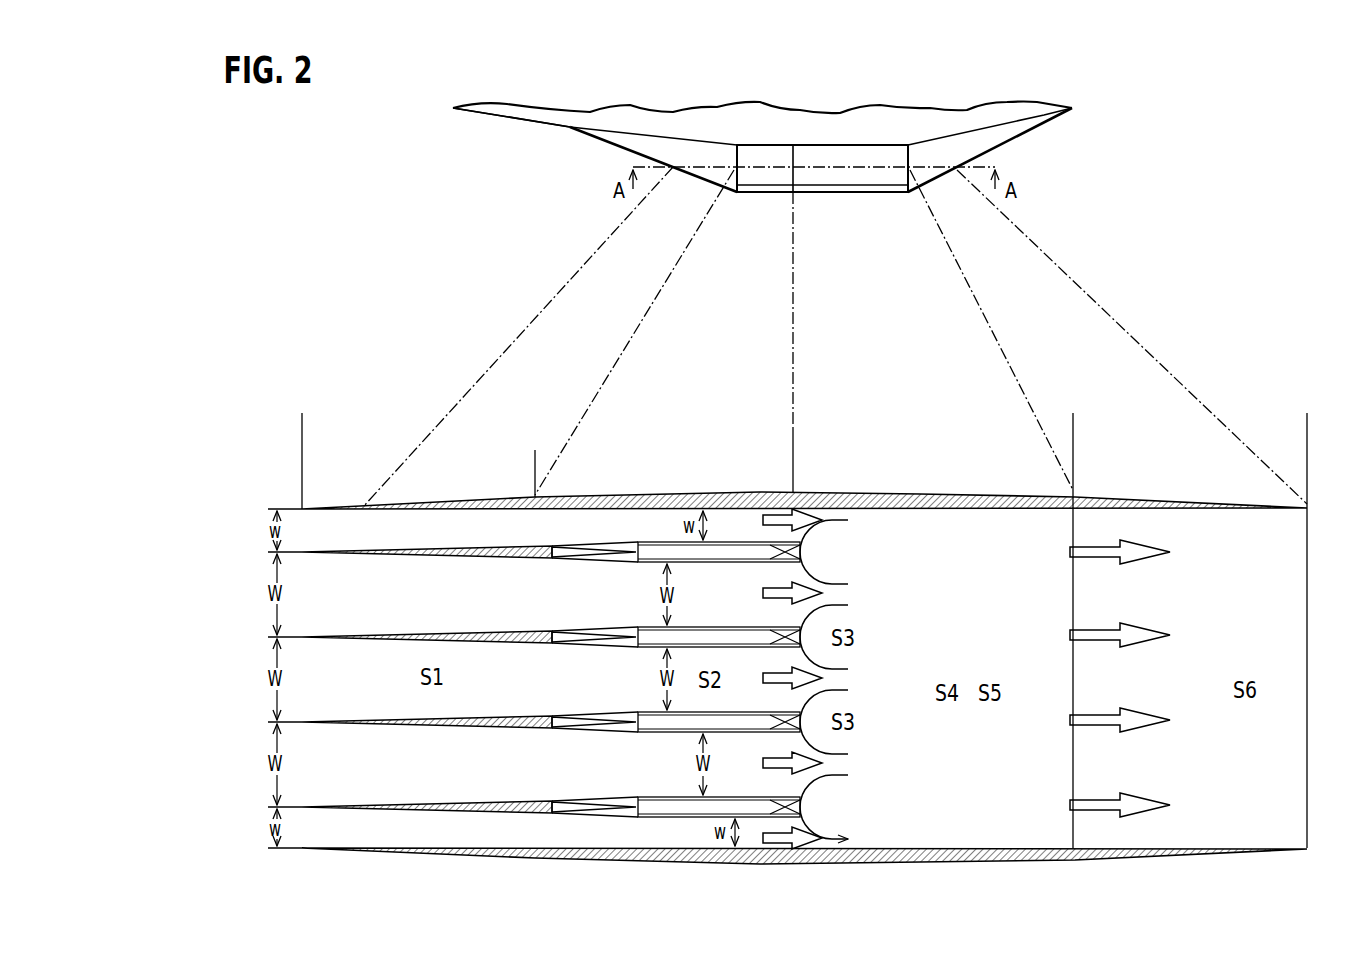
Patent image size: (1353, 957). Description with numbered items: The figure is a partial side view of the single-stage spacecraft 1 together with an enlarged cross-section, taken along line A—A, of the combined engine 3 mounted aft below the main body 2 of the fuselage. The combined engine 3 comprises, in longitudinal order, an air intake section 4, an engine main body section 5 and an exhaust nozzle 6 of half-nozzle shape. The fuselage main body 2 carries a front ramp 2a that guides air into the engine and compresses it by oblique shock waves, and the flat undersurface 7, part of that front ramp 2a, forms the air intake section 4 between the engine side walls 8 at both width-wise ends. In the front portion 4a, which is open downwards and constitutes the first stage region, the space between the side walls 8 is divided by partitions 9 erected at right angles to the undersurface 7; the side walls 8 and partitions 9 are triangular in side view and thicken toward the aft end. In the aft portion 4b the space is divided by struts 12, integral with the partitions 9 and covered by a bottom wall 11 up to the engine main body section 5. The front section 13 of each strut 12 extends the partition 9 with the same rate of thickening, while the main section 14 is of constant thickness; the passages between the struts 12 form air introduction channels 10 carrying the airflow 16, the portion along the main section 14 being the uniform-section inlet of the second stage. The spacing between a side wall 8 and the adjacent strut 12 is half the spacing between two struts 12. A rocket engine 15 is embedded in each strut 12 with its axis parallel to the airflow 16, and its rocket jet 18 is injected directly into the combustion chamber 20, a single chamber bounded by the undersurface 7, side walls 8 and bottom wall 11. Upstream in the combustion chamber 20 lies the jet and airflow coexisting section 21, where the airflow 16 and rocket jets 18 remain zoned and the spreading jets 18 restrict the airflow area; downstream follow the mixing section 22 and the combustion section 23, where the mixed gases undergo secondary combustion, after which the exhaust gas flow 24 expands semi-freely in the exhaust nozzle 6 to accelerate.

The single-stage spacecraft 1 is at (1096, 86).
The main body of the fuselage 2 is at (888, 130).
The front ramp 2a is at (533, 123).
The combined engine 3 is at (825, 196).
The air intake section 4 is at (793, 428).
The front portion of the air intake section 4a is at (302, 460).
The aft portion of the air intake section 4b is at (793, 460).
The engine main body section 5 is at (793, 428).
The exhaust nozzle 6 is at (1073, 428).
The flat undersurface of the main body 7 is at (678, 146).
The engine side wall 8 is at (770, 890).
The partition 9 is at (472, 558).
The air introduction channel 10 is at (615, 845).
The bottom wall 11 is at (872, 194).
The strut 12 is at (637, 540).
The front section of the strut 13 is at (557, 561).
The main section of the strut 14 is at (685, 563).
The rocket engine 15 is at (726, 556).
The airflow 16 is at (766, 590).
The rocket jet 18 is at (805, 557).
The combustion chamber 20 is at (1030, 650).
The jet and airflow coexisting section 21 is at (935, 827).
The mixing section 22 is at (935, 650).
The combustion section 23 is at (978, 650).
The exhaust gas flow 24 is at (1143, 560).